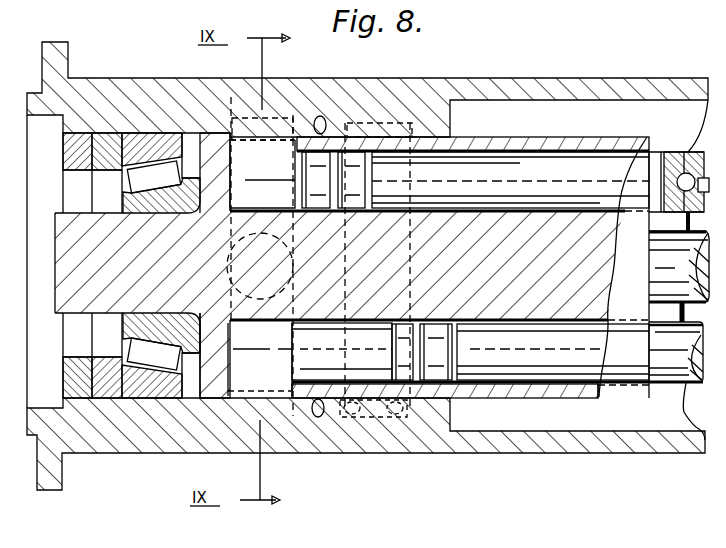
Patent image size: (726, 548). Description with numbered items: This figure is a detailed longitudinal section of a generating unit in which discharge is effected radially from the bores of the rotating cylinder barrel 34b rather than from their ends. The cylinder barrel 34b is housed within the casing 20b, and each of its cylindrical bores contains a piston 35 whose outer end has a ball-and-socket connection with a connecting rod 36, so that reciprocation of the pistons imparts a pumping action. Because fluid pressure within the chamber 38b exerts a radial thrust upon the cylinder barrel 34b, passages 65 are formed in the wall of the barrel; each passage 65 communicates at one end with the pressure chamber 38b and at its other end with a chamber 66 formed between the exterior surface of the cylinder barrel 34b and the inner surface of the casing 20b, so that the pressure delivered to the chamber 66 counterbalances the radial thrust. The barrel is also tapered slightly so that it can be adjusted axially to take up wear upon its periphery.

The casing 20b is at (492, 97).
The cylinder barrel 34b is at (565, 143).
The piston 35 is at (615, 170).
The connecting rod 36 is at (687, 173).
The pressure chamber 38b is at (231, 97).
The passage 65 is at (319, 116).
The chamber 66 is at (378, 122).